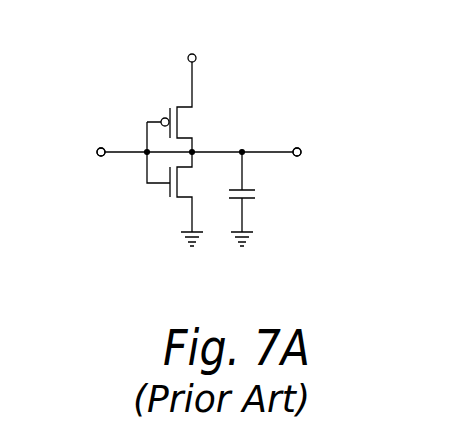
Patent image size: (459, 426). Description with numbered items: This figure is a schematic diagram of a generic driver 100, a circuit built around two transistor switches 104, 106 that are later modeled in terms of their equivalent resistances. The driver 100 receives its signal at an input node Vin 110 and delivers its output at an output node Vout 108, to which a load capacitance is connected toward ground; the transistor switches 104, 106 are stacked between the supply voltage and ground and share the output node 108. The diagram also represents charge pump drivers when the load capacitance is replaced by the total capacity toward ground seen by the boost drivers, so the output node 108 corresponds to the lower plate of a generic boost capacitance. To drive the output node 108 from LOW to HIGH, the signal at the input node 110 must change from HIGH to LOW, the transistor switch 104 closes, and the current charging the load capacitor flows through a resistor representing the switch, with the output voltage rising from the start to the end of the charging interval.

The generic driver 100 is at (271, 57).
The transistor switch 104 is at (186, 106).
The transistor switch 106 is at (184, 198).
The output node 108 is at (296, 147).
The input node 110 is at (100, 147).